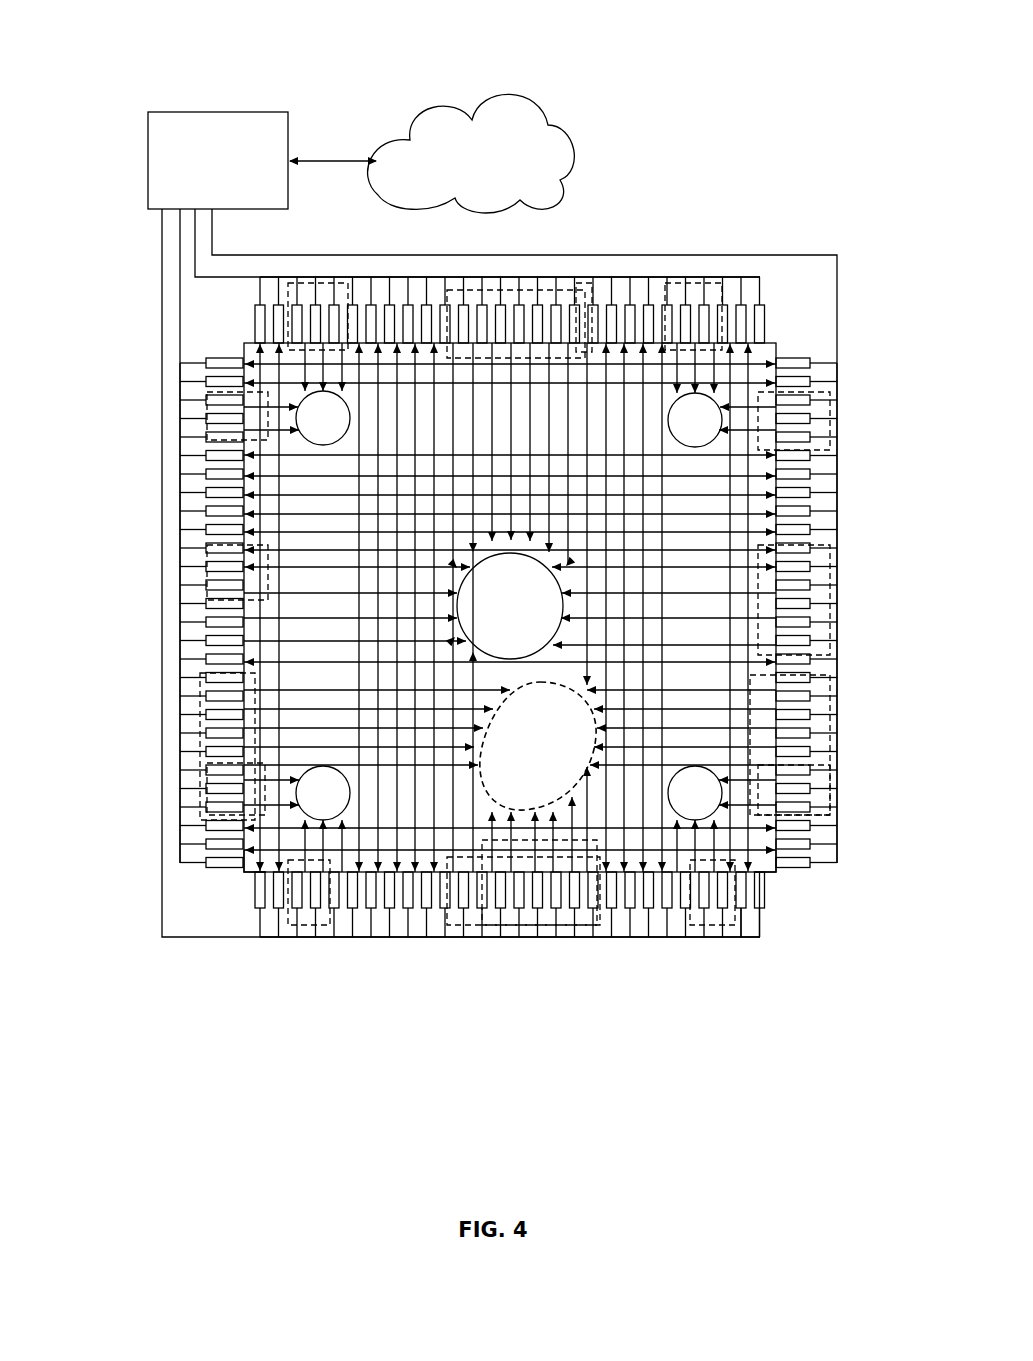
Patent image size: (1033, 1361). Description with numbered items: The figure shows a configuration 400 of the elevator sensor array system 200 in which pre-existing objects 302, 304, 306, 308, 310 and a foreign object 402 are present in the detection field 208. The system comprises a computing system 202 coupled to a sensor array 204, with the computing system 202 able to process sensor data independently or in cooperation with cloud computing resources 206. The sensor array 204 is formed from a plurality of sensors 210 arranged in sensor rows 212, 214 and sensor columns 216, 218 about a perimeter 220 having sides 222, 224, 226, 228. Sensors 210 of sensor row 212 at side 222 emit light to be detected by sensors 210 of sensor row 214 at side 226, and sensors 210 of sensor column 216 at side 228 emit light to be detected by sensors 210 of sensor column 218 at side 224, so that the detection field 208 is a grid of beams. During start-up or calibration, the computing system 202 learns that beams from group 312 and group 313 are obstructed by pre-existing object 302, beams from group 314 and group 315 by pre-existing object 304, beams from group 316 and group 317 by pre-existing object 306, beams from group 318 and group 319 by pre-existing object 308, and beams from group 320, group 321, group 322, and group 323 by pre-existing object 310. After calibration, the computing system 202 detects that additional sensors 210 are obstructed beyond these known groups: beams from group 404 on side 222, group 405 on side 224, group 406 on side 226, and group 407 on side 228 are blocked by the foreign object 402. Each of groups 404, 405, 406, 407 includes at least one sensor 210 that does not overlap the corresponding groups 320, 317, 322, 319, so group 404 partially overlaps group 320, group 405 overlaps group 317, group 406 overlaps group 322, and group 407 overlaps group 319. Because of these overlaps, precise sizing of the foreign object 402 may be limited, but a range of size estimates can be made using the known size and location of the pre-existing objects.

The elevator sensor array system 200 is at (406, 48).
The computing system 202 is at (199, 170).
The sensor array 204 is at (120, 285).
The cloud computing resources 206 is at (444, 173).
The detection field 208 is at (308, 536).
The sensors 210 is at (128, 592).
The sensor row 212 is at (620, 242).
The sensor row 214 is at (268, 952).
The sensor column 216 is at (128, 410).
The sensor column 218 is at (850, 350).
The perimeter 220 is at (804, 918).
The side 222 is at (780, 345).
The side 224 is at (785, 872).
The side 226 is at (770, 880).
The side 228 is at (243, 872).
The pre-existing object 302 is at (305, 430).
The pre-existing object 304 is at (677, 432).
The pre-existing object 306 is at (677, 805).
The pre-existing object 308 is at (305, 805).
The pre-existing object 310 is at (491, 617).
The group of sensors 312 is at (345, 284).
The group of sensors 313 is at (204, 426).
The group of sensors 314 is at (700, 285).
The group of sensors 315 is at (832, 414).
The group of sensors 316 is at (680, 926).
The group of sensors 317 is at (832, 798).
The group of sensors 318 is at (315, 926).
The group of sensors 319 is at (204, 804).
The group of sensors 320 is at (550, 287).
The group of sensors 321 is at (836, 604).
The group of sensors 322 is at (512, 926).
The group of sensors 323 is at (204, 611).
The configuration 400 is at (338, 90).
The foreign object 402 is at (521, 757).
The group of sensors 404 is at (586, 284).
The group of sensors 405 is at (832, 704).
The group of sensors 406 is at (595, 921).
The group of sensors 407 is at (204, 706).